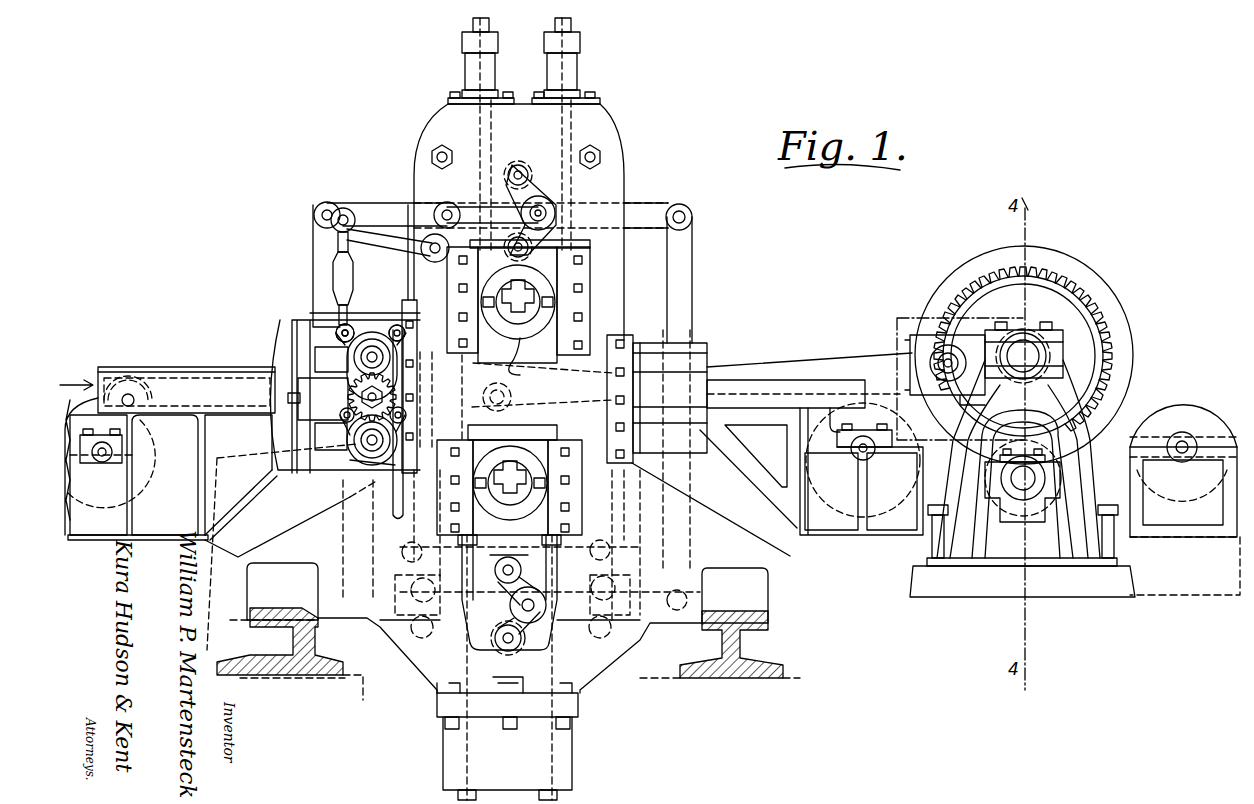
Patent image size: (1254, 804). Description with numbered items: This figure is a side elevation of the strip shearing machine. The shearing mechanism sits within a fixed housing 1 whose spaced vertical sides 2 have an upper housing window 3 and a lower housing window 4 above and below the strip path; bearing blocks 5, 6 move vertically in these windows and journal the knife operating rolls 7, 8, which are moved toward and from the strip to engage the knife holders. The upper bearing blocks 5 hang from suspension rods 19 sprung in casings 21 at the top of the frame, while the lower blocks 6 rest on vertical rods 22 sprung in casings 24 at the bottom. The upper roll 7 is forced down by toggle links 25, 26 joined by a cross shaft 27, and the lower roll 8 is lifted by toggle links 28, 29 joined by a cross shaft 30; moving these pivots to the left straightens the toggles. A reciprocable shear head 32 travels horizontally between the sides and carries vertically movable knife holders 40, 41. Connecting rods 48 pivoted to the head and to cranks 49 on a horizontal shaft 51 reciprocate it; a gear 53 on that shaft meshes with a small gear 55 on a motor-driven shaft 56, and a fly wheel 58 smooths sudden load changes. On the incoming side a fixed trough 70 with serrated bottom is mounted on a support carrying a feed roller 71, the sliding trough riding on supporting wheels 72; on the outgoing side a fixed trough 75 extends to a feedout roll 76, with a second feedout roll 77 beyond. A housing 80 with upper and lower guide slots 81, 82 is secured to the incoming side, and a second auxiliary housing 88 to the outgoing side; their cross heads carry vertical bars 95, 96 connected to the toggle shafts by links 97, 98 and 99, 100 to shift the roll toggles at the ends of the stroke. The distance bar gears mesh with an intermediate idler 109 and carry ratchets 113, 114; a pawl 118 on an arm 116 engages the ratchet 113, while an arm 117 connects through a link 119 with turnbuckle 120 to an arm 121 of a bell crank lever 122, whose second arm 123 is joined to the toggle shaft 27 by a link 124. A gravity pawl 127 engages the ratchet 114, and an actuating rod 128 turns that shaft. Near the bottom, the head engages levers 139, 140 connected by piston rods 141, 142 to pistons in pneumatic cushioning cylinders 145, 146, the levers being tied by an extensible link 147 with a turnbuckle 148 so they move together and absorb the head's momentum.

The fixed housing 1 is at (768, 605).
The vertical sides 2 is at (612, 190).
The upper housing window 3 is at (560, 187).
The lower housing window 4 is at (545, 578).
The upper bearing block 5 is at (515, 366).
The lower bearing block 6 is at (522, 468).
The upper roll 7 is at (560, 268).
The lower roll 8 is at (507, 470).
The suspension rods 19 is at (552, 135).
The casings 21 is at (545, 68).
The vertical rods 22 is at (470, 660).
The casings 24 is at (572, 762).
The toggle link 25 is at (522, 188).
The toggle link 26 is at (560, 243).
The cross shaft 27 is at (556, 210).
The toggle link 28 is at (500, 576).
The toggle link 29 is at (502, 628).
The cross shaft 30 is at (542, 616).
The shear head 32 is at (425, 345).
The knife holder 40 is at (468, 370).
The knife holder 41 is at (440, 426).
The connecting rods 48 is at (795, 366).
The cranks 49 is at (968, 345).
The horizontal shaft 51 is at (1030, 348).
The gear 53 is at (1098, 300).
The small gear 55 is at (1036, 515).
The shaft 56 is at (1035, 480).
The fly wheel 58 is at (1040, 252).
The fixed trough 70 is at (205, 380).
The feed roller 71 is at (135, 482).
The supporting wheels 72 is at (135, 394).
The fixed trough 75 is at (825, 398).
The feedout roll 76 is at (920, 395).
The second feedout roll 77 is at (1186, 400).
The housing 80 is at (283, 330).
The upper guide slot 81 is at (335, 370).
The lower guide slot 82 is at (330, 445).
The second auxiliary housing 88 is at (700, 345).
The vertical bar 95 is at (318, 270).
The vertical bar 96 is at (690, 282).
The link 97 is at (380, 205).
The link 98 is at (477, 604).
The link 99 is at (642, 228).
The link 100 is at (630, 595).
The intermediate idler 109 is at (384, 386).
The ratchet 113 is at (368, 330).
The ratchet 114 is at (395, 468).
The arm 116 is at (396, 322).
The arm 117 is at (333, 359).
The pawl 118 is at (373, 284).
The link 119 is at (335, 322).
The turnbuckle 120 is at (350, 280).
The arm 121 is at (350, 206).
The bell crank lever 122 is at (425, 260).
The second arm 123 is at (440, 240).
The link 124 is at (466, 212).
The gravity pawl 127 is at (350, 458).
The actuating rod 128 is at (403, 503).
The lever 139 is at (430, 520).
The lever 140 is at (605, 518).
The piston rod 141 is at (360, 510).
The piston rod 142 is at (700, 476).
The pneumatic cushioning cylinder 145 is at (238, 557).
The pneumatic cushioning cylinder 146 is at (788, 555).
The extensible link 147 is at (590, 550).
The turnbuckle 148 is at (530, 548).